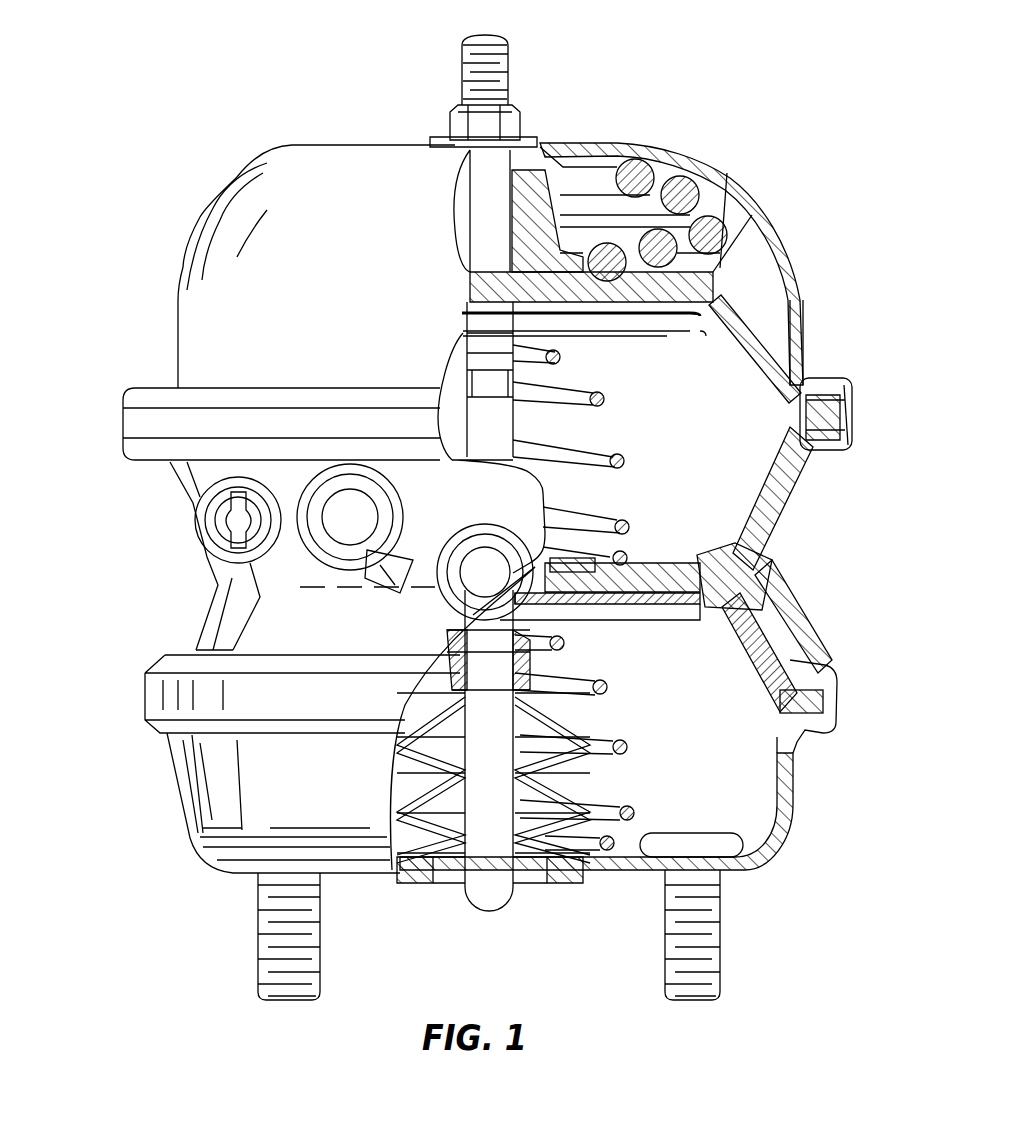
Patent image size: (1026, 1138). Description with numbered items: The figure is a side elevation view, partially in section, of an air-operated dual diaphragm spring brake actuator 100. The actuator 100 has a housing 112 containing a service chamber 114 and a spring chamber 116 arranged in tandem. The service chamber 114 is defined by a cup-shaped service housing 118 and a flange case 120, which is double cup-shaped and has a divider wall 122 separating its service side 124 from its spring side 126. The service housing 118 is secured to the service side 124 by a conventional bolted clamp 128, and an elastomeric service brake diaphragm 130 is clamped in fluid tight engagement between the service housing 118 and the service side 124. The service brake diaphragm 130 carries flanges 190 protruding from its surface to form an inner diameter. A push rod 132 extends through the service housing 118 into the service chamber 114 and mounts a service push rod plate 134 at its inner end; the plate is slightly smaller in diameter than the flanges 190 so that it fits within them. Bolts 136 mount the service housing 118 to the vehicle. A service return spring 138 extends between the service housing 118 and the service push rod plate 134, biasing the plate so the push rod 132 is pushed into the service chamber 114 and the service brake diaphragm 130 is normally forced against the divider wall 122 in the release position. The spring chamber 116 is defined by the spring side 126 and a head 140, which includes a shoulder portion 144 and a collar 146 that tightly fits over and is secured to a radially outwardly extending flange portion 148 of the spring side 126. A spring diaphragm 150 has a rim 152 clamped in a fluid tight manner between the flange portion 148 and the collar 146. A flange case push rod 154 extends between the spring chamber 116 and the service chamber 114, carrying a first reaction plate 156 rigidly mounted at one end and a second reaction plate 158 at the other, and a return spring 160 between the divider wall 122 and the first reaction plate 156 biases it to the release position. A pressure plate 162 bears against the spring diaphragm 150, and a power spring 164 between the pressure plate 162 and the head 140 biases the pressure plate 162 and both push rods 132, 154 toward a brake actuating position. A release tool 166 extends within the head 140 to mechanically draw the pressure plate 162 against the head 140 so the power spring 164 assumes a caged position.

The brake actuator 100 is at (240, 127).
The housing 112 is at (718, 152).
The service chamber 114 is at (717, 782).
The spring chamber 116 is at (707, 418).
The service housing 118 is at (793, 823).
The flange case 120 is at (220, 587).
The divider wall 122 is at (737, 546).
The service side 124 is at (200, 645).
The spring side 126 is at (178, 478).
The bolted clamp 128 is at (165, 737).
The service brake diaphragm 130 is at (748, 645).
The push rod 132 is at (482, 910).
The service push rod plate 134 is at (673, 622).
The bolts 136 is at (720, 968).
The service return spring 138 is at (592, 676).
The head 140 is at (800, 262).
The shoulder portion 144 is at (822, 380).
The collar 146 is at (125, 425).
The flange portion 148 is at (815, 450).
The spring diaphragm 150 is at (760, 342).
The rim 152 is at (836, 401).
The flange case push rod 154 is at (518, 422).
The first reaction plate 156 is at (668, 337).
The second reaction plate 158 is at (622, 550).
The return spring 160 is at (616, 520).
The pressure plate 162 is at (713, 275).
The power spring 164 is at (637, 163).
The release tool 166 is at (507, 80).
The flanges 190 is at (760, 612).